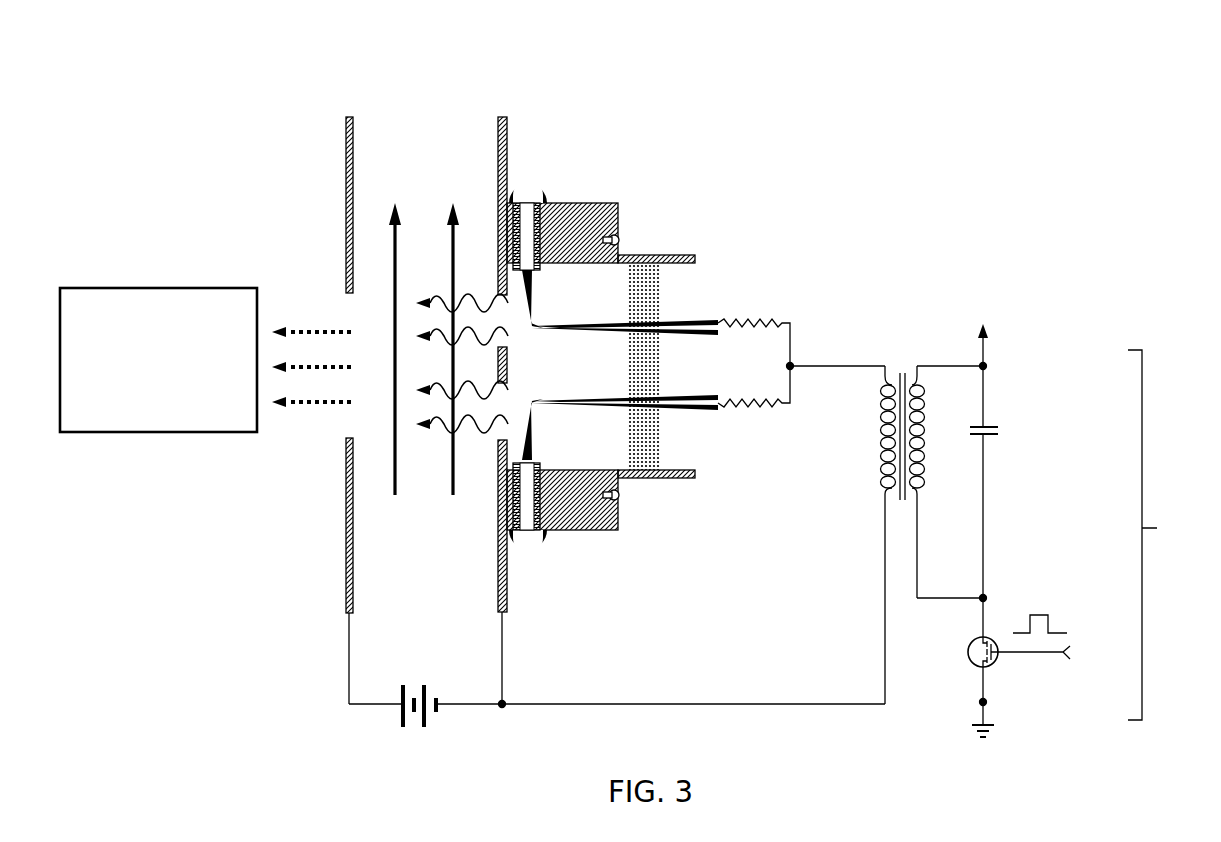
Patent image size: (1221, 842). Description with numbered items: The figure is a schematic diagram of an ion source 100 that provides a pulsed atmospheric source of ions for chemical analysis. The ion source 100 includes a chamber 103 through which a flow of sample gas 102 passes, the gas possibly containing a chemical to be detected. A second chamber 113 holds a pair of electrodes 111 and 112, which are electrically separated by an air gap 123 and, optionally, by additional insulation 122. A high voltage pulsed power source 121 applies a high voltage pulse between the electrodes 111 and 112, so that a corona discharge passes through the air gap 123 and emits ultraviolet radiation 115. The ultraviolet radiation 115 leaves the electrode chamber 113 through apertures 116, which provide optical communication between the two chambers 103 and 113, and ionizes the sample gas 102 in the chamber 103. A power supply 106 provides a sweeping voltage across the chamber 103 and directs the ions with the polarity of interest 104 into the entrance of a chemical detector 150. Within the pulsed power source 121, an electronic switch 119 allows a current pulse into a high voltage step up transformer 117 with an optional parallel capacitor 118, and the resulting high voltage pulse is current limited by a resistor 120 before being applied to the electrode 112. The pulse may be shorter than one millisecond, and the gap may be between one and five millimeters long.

The ion source 100 is at (957, 204).
The sample gas 102 is at (395, 495).
The chamber 103 is at (403, 160).
The ions with the polarity of interest 104 is at (305, 297).
The power supply 106 is at (417, 728).
The electrode 111 is at (583, 287).
The electrode 112 is at (710, 322).
The chamber 113 is at (548, 283).
The ultraviolet radiation 115 is at (505, 401).
The apertures 116 is at (500, 298).
The high voltage step up transformer 117 is at (900, 368).
The parallel capacitor 118 is at (1000, 432).
The electronic switch 119 is at (995, 632).
The resistor 120 is at (748, 407).
The high voltage pulsed power source 121 is at (1060, 525).
The additional insulation 122 is at (643, 447).
The air gap 123 is at (594, 530).
The chemical detector 150 is at (139, 394).